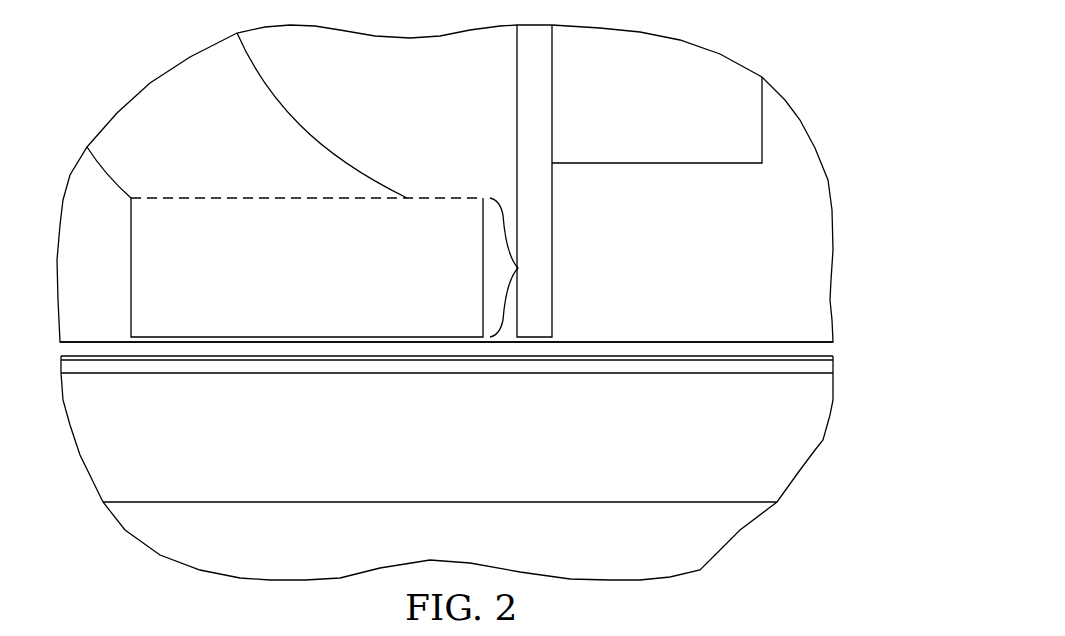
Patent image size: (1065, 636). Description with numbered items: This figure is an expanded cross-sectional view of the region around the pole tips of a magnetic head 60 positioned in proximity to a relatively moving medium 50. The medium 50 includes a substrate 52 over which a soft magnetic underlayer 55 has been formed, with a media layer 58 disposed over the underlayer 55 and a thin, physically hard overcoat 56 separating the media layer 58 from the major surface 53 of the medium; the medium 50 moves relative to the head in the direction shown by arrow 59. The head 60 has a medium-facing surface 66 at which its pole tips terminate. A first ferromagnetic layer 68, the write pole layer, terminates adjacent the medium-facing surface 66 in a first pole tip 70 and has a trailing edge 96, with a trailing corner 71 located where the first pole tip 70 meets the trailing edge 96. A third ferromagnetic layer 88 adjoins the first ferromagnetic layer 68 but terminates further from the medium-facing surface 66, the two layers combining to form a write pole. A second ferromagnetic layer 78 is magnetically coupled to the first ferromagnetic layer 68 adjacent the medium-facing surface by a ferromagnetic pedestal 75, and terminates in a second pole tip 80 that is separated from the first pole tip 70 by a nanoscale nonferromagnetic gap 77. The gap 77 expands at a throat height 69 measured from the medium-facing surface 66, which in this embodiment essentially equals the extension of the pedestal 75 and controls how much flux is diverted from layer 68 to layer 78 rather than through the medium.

The medium 50 is at (800, 545).
The substrate 52 is at (590, 556).
The major surface 53 is at (762, 356).
The soft magnetic underlayer 55 is at (395, 469).
The overcoat 56 is at (676, 360).
The media layer 58 is at (745, 373).
The arrow 59 is at (325, 537).
The magnetic head 60 is at (792, 68).
The medium-facing surface 66 is at (797, 343).
The first ferromagnetic layer 68 is at (517, 113).
The throat height 69 is at (517, 267).
The first pole tip 70 is at (535, 339).
The trailing corner 71 is at (510, 340).
The ferromagnetic pedestal 75 is at (232, 196).
The nonferromagnetic gap 77 is at (483, 269).
The second ferromagnetic layer 78 is at (270, 97).
The second pole tip 80 is at (306, 338).
The third ferromagnetic layer 88 is at (762, 128).
The trailing edge 96 is at (517, 77).